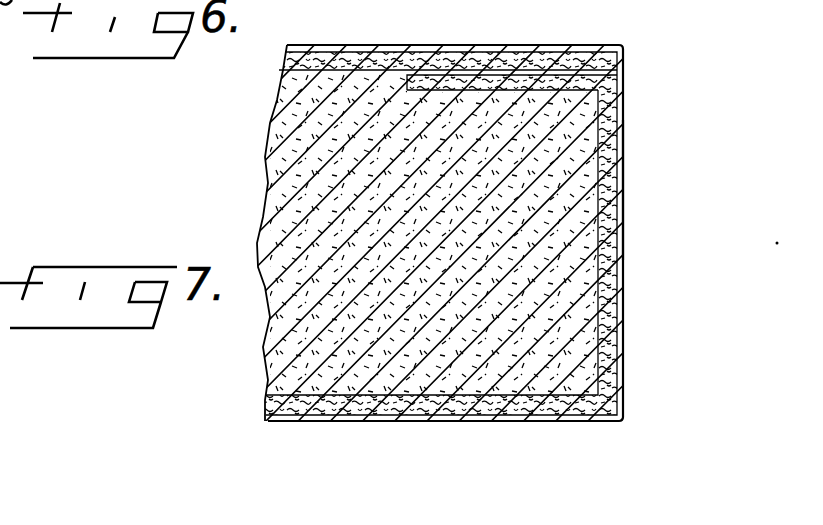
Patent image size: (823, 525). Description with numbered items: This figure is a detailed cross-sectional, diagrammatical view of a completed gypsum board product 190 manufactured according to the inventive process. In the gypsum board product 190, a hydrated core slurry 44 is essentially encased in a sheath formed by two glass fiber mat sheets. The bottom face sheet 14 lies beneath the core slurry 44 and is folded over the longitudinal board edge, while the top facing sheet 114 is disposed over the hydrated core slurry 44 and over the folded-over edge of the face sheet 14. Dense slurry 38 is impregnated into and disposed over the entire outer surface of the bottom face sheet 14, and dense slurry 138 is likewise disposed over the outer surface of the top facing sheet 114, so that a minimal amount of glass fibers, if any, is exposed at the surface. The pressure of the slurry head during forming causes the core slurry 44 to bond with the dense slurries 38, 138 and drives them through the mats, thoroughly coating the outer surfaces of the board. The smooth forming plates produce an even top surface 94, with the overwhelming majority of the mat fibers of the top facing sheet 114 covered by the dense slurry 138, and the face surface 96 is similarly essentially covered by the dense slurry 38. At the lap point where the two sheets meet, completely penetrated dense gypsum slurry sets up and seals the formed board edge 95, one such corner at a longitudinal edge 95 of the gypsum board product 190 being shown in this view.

The gypsum board product 190 is at (620, 35).
The core slurry 44 is at (268, 175).
The dense slurry 38 is at (620, 231).
The bottom face sheet 14 is at (610, 88).
The top face sheet 114 is at (381, 56).
The dense slurry 138 is at (484, 44).
The top surface 94 is at (339, 20).
The board edge 95 is at (620, 181).
The face surface 96 is at (388, 421).